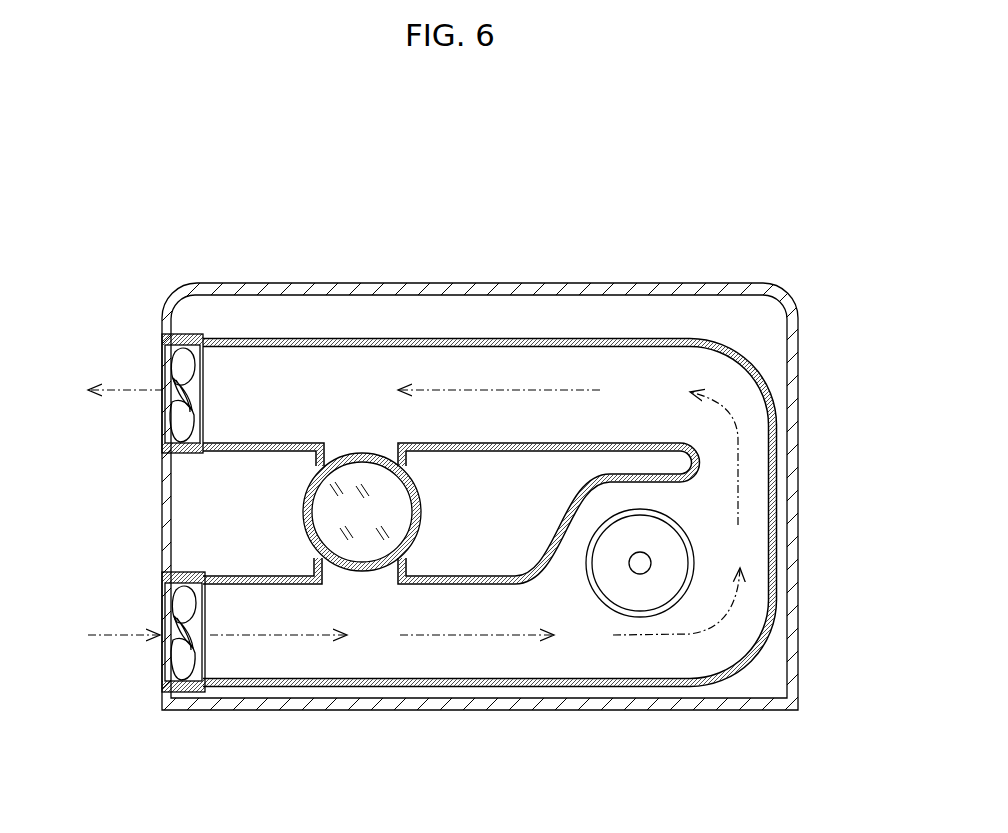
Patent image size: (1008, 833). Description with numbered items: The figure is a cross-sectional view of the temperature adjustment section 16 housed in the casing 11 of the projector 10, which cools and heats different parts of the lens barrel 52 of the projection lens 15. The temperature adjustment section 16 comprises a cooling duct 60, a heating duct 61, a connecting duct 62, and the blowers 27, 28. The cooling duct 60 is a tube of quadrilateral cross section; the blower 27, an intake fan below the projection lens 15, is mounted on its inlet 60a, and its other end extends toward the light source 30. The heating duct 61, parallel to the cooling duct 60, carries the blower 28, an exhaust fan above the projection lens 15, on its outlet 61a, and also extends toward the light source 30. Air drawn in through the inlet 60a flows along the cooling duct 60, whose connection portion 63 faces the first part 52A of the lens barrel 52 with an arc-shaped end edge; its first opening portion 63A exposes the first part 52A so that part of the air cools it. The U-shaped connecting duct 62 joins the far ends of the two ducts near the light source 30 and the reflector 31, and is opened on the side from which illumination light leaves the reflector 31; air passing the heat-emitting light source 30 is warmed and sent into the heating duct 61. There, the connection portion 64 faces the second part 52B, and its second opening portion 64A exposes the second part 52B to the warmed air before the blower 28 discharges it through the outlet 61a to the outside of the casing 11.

The projector 10 is at (385, 208).
The casing 11 is at (625, 285).
The projection lens 15 is at (390, 499).
The temperature adjustment section 16 is at (716, 331).
The blower 27 is at (176, 666).
The blower 28 is at (176, 359).
The light source 30 is at (640, 563).
The reflector 31 is at (663, 510).
The lens barrel 52 is at (300, 511).
The first part 52A is at (365, 572).
The second part 52B is at (357, 454).
The cooling duct 60 is at (392, 665).
The inlet 60a is at (201, 580).
The heating duct 61 is at (435, 360).
The outlet 61a is at (199, 343).
The connecting duct 62 is at (756, 527).
The connection portion 63 is at (414, 566).
The first opening portion 63A is at (330, 580).
The connection portion 64 is at (412, 451).
The second opening portion 64A is at (318, 443).